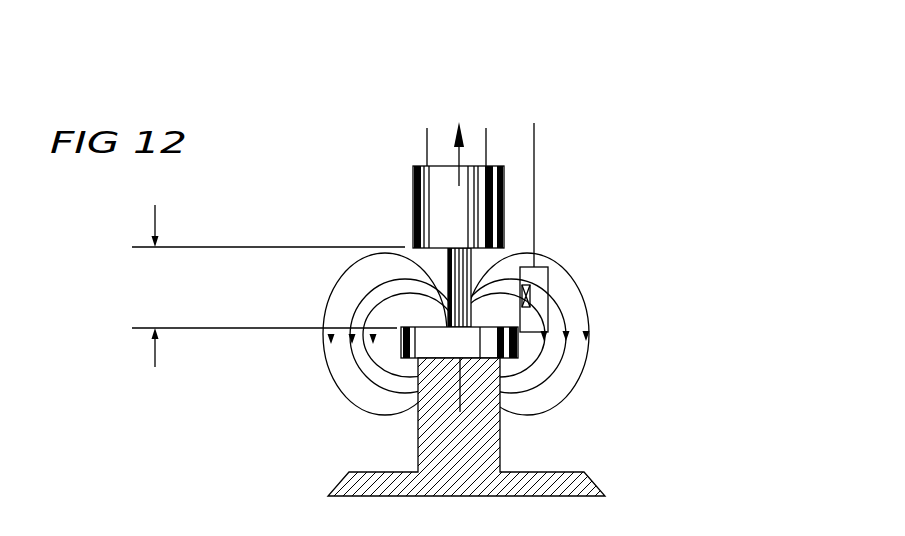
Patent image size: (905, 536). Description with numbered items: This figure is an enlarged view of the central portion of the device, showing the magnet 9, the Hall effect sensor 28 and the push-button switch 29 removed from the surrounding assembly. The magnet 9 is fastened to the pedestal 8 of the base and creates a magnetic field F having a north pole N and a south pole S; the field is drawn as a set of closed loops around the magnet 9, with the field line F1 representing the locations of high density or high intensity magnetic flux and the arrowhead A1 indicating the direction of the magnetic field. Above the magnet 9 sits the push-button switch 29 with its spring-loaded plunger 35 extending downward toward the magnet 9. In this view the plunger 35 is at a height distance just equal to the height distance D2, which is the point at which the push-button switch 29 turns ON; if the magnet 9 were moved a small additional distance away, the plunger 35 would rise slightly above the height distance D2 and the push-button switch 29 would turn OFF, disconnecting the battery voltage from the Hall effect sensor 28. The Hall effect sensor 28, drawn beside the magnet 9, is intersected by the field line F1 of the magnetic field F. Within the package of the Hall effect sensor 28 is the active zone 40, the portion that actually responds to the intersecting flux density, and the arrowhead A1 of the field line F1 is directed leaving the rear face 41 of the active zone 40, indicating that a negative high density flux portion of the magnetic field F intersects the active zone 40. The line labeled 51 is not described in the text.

The push-button switch 29 is at (441, 216).
The plunger 35 is at (448, 315).
The magnet 9 is at (423, 343).
The pedestal 8 is at (428, 423).
The Hall effect sensor 28 is at (540, 272).
The active zone 40 is at (527, 287).
The rear face 41 is at (532, 295).
The outer magnetic flux line 51 is at (587, 323).
The arrowhead A1 is at (543, 338).
The magnetic field F is at (562, 383).
The field line F1 is at (543, 358).
The height distance D2 is at (268, 286).
The north pole N is at (458, 140).
The south pole S is at (460, 445).